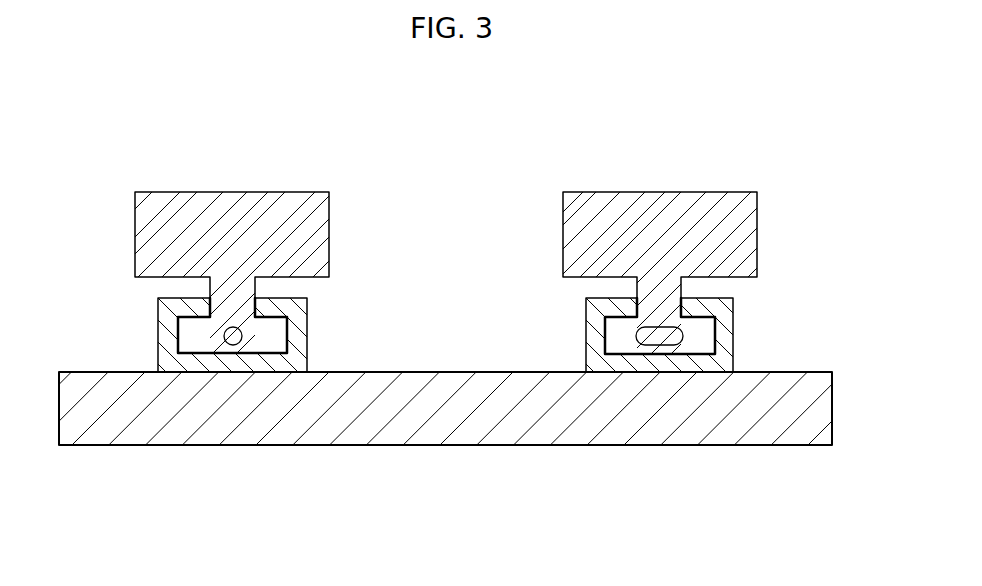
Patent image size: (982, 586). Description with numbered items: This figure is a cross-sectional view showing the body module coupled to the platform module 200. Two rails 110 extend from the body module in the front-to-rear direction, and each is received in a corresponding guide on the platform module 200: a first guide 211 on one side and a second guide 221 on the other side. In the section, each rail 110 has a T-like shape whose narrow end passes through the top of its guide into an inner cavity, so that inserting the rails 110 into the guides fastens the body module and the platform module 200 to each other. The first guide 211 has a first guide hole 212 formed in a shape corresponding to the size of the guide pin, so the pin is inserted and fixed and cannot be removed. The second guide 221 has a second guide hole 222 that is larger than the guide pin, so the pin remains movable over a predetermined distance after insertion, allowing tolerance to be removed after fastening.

The rail 110 is at (208, 203).
The platform module 200 is at (400, 445).
The first guide 211 is at (163, 332).
The first guide hole 212 is at (233, 345).
The second guide 221 is at (728, 332).
The second guide hole 222 is at (659, 345).